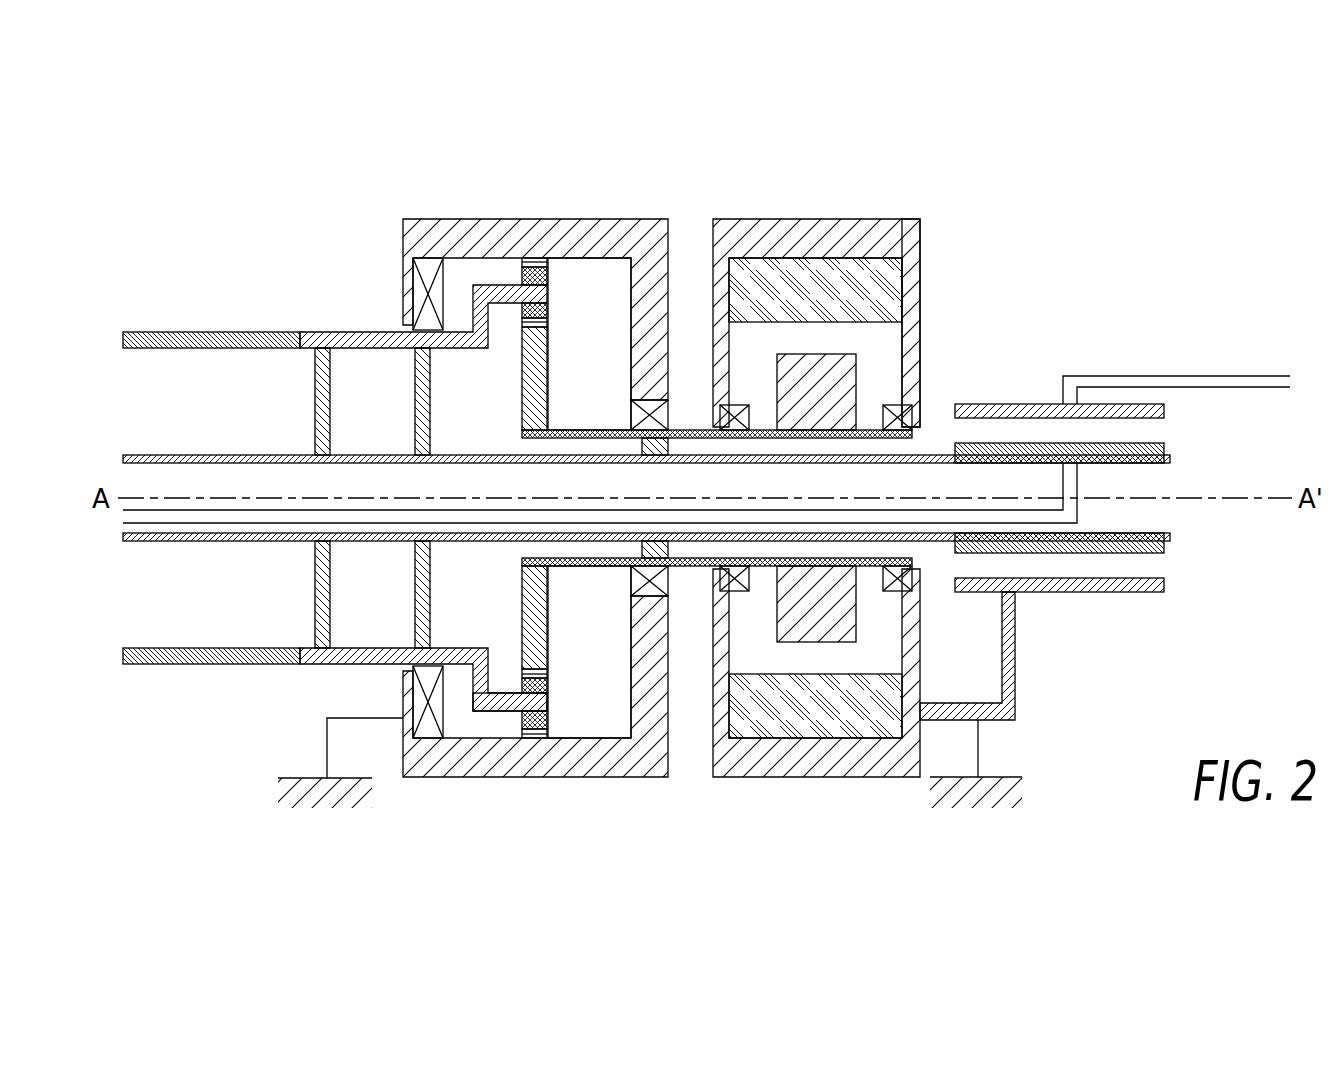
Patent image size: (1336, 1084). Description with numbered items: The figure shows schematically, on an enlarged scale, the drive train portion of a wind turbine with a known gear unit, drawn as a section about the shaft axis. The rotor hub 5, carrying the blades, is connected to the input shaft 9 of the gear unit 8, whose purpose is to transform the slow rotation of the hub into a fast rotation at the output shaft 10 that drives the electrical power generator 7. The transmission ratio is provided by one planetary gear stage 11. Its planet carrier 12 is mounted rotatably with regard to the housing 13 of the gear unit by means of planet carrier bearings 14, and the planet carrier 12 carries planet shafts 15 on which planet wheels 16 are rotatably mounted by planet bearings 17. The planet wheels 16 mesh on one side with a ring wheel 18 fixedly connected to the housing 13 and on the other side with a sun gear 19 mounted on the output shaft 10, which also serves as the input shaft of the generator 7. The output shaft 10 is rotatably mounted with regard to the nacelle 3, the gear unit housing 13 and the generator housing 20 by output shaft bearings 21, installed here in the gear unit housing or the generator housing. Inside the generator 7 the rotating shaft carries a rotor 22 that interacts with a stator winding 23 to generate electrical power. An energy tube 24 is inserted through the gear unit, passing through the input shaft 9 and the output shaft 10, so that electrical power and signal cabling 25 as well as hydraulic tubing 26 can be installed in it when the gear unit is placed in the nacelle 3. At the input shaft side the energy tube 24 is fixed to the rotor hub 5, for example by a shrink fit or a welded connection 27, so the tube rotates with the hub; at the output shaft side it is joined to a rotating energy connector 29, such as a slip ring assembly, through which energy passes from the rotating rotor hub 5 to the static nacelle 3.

The nacelle 3 is at (1022, 800).
The rotor hub 5 is at (188, 332).
The electrical power generator 7 is at (816, 190).
The gear unit 8 is at (461, 200).
The input shaft 9 is at (367, 332).
The output shaft 10 is at (680, 432).
The planetary gear stage 11 is at (591, 286).
The planet carrier 12 is at (462, 648).
The housing 13 is at (535, 777).
The planet carrier bearings 14 is at (420, 706).
The planet shafts 15 is at (515, 693).
The planet wheels 16 is at (548, 676).
The planet bearings 17 is at (548, 690).
The ring wheel 18 is at (548, 730).
The sun gear 19 is at (522, 395).
The electrical power generator housing 20 is at (922, 252).
The output shaft bearings 21 is at (634, 418).
The rotor 22 is at (797, 627).
The stator winding 23 is at (866, 263).
The energy tube 24 is at (238, 455).
The electrical power and signal cabling 25 is at (1178, 375).
The hydraulic tubing 26 is at (1237, 386).
The welded connection 27 is at (314, 452).
The rotating energy connector 29 is at (1033, 372).